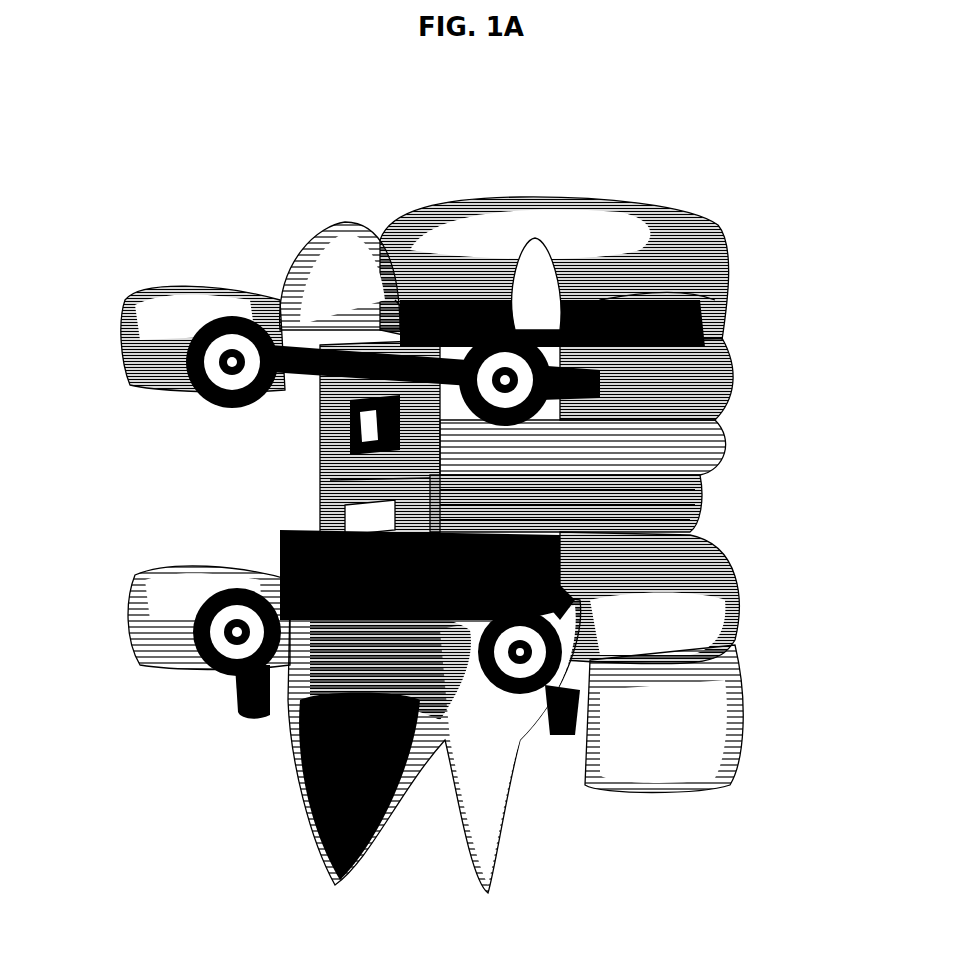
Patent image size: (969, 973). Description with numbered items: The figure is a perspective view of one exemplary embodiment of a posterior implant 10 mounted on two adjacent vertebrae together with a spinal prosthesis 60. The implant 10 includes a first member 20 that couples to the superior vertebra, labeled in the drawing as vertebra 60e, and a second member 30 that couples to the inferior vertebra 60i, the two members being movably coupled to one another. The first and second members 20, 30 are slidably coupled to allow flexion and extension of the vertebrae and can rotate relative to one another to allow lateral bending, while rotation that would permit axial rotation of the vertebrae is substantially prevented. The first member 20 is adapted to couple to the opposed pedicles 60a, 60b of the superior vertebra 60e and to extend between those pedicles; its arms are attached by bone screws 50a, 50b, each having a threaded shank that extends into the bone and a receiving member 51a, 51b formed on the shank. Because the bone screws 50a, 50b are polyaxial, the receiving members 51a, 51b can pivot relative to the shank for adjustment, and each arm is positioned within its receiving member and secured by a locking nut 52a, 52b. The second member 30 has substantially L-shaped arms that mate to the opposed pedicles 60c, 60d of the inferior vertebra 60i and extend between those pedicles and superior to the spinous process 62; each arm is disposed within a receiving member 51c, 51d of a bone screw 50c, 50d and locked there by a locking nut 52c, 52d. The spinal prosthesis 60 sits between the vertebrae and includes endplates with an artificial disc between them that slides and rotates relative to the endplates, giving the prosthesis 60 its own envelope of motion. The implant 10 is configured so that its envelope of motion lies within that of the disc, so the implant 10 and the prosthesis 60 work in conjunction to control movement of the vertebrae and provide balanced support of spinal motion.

The posterior implant 10 is at (150, 222).
The first member 20 is at (312, 426).
The second member 30 is at (280, 530).
The bone screw 50a is at (620, 345).
The bone screw 50b is at (178, 336).
The bone screw 50c is at (654, 653).
The bone screw 50d is at (172, 682).
The receiving member 51a is at (538, 332).
The receiving member 51b is at (226, 333).
The receiving member 51c is at (562, 656).
The receiving member 51d is at (168, 665).
The locking nut 52a is at (622, 413).
The locking nut 52b is at (203, 372).
The locking nut 52c is at (482, 618).
The locking nut 52d is at (228, 672).
The spinal prosthesis 60 is at (693, 516).
The pedicle 60a is at (690, 392).
The pedicle 60b is at (182, 340).
The pedicle 60c is at (706, 672).
The pedicle 60d is at (204, 631).
The superior vertebral body 60e is at (648, 254).
The inferior vertebra 60i is at (668, 756).
The spinous process 62 is at (292, 778).